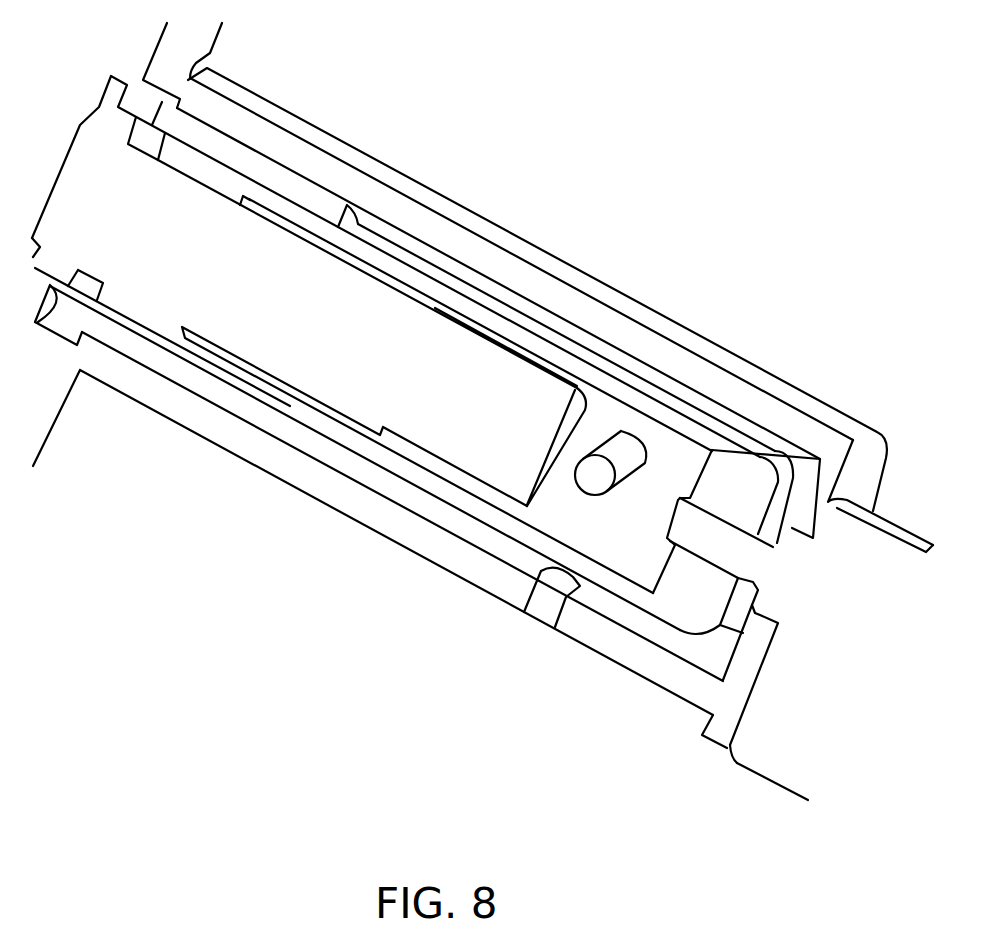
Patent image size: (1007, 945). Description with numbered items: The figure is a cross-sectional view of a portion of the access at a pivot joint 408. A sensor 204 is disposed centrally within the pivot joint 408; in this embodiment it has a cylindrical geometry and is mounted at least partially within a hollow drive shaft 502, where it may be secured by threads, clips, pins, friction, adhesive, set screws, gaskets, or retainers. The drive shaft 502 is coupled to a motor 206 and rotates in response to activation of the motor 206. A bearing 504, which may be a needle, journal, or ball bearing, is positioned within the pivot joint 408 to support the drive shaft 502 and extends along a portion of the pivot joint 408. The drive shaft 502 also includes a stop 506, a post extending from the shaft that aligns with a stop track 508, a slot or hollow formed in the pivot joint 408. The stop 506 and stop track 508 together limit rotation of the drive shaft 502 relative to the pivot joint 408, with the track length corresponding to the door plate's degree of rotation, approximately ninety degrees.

The sensor 204 is at (98, 147).
The motor 206 is at (787, 770).
The pivot joint 408 is at (532, 241).
The drive shaft 502 is at (750, 463).
The bearing 504 is at (303, 193).
The stop 506 is at (640, 430).
The stop track 508 is at (550, 572).